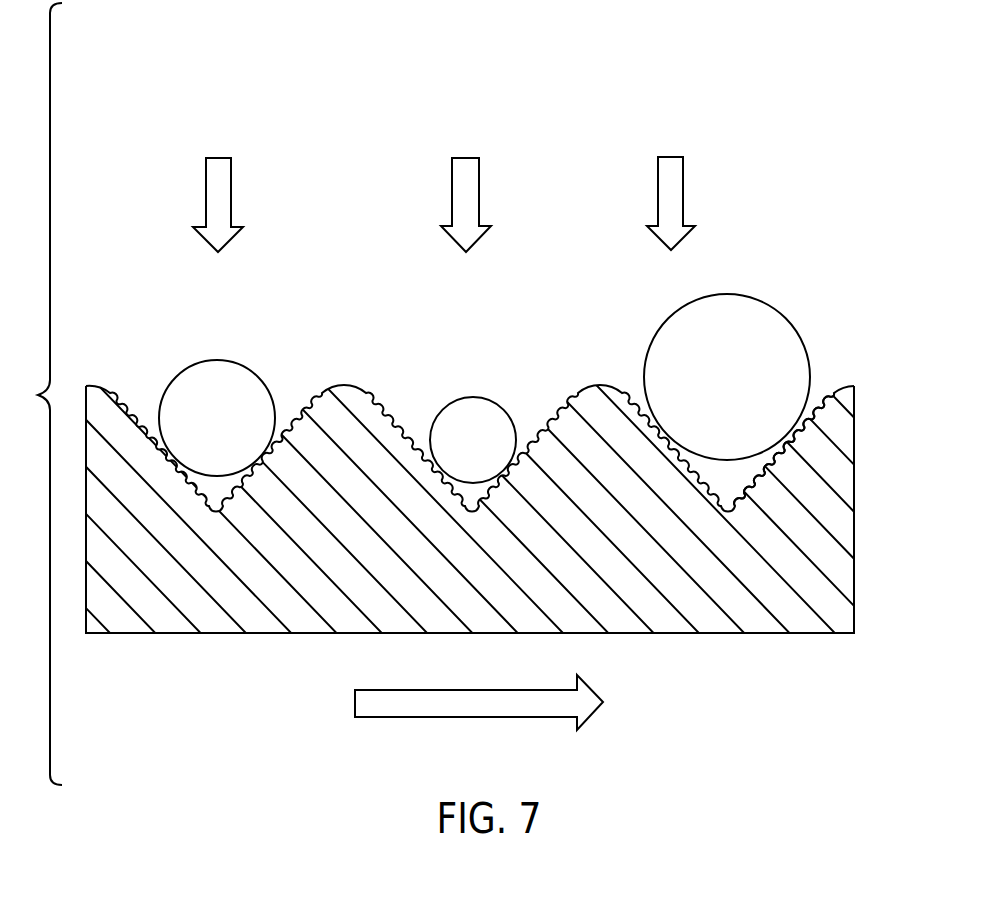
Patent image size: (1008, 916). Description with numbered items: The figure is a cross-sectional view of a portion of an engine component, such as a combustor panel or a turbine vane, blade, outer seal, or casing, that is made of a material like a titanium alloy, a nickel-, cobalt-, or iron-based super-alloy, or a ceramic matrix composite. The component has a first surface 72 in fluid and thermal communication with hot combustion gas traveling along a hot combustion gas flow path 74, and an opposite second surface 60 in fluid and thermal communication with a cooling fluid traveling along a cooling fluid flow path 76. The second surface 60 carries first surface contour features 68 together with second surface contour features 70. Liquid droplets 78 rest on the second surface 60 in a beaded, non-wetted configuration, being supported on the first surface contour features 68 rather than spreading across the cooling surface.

The second surface 60 is at (323, 393).
The first surface contour features 68 is at (778, 480).
The second surface contour features 70 is at (595, 495).
The first surface 72 is at (225, 634).
The hot combustion gas flow path 74 is at (370, 717).
The cooling fluid flow path 76 is at (658, 185).
The liquid droplets 78 is at (784, 349).